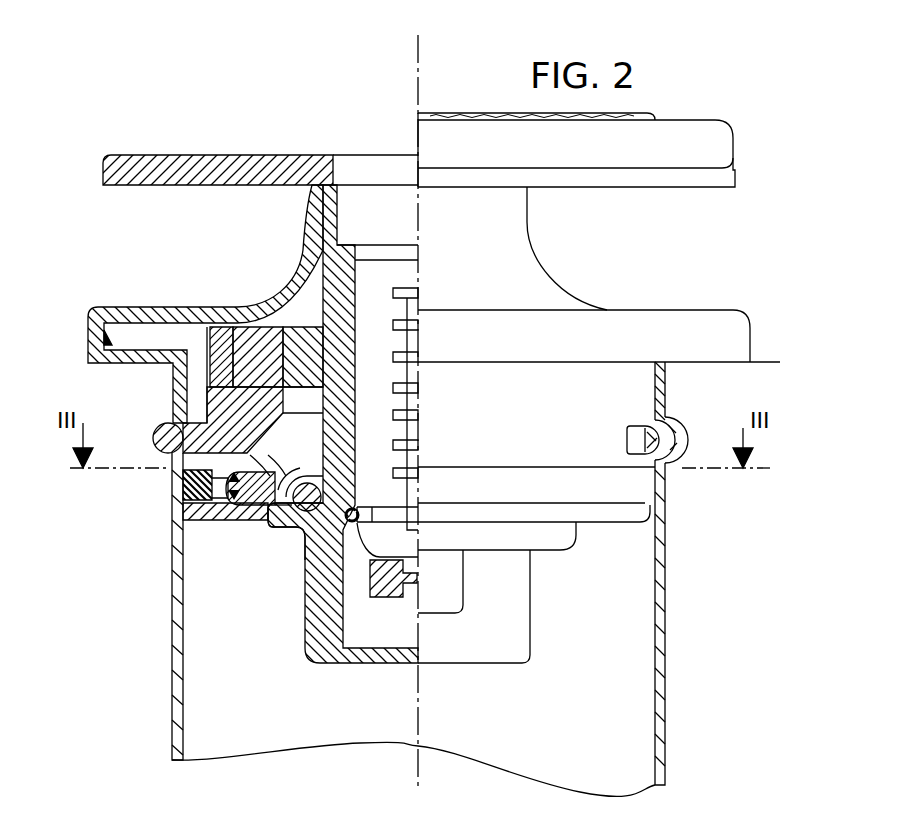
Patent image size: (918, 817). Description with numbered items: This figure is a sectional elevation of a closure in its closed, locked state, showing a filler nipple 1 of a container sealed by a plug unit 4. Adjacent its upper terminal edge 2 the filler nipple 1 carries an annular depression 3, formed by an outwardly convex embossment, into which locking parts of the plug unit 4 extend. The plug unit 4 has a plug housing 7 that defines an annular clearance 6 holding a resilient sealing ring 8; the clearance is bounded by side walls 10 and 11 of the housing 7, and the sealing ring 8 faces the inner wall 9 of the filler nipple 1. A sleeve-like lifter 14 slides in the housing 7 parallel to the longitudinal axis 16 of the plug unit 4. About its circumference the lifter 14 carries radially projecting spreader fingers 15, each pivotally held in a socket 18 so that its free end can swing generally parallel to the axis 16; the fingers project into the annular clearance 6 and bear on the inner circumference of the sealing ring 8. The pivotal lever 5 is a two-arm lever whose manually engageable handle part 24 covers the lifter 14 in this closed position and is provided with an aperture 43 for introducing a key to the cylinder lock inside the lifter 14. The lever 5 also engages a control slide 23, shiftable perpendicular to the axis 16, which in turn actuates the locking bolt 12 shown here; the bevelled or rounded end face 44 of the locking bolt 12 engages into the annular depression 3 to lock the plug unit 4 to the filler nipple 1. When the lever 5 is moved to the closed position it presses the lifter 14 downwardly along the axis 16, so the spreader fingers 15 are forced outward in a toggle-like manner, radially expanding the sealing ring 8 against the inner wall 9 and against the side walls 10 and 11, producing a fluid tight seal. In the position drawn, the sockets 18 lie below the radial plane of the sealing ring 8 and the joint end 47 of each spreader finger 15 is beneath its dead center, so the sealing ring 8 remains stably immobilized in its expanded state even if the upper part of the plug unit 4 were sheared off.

The filler nipple 1 is at (667, 616).
The upper terminal edge 2 is at (668, 380).
The annular depression 3 is at (643, 425).
The plug unit 4 is at (605, 246).
The pivotal lever 5 is at (419, 121).
The annular clearance 6 is at (224, 495).
The plug housing 7 is at (163, 308).
The sealing ring 8 is at (215, 536).
The inner wall 9 is at (183, 663).
The side wall 10 is at (183, 498).
The side wall 11 is at (180, 486).
The locking bolt 12 is at (272, 370).
The lifter 14 is at (332, 298).
The spreader finger 15 is at (265, 505).
The longitudinal axis 16 is at (418, 68).
The socket 18 is at (311, 481).
The control slide 23 is at (228, 345).
The handle part 24 is at (296, 168).
The aperture 43 is at (380, 152).
The end face 44 is at (158, 428).
The joint end 47 is at (338, 462).